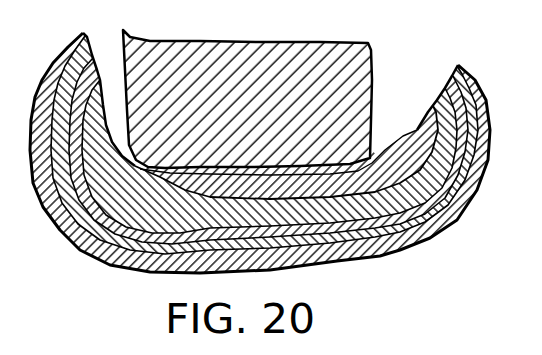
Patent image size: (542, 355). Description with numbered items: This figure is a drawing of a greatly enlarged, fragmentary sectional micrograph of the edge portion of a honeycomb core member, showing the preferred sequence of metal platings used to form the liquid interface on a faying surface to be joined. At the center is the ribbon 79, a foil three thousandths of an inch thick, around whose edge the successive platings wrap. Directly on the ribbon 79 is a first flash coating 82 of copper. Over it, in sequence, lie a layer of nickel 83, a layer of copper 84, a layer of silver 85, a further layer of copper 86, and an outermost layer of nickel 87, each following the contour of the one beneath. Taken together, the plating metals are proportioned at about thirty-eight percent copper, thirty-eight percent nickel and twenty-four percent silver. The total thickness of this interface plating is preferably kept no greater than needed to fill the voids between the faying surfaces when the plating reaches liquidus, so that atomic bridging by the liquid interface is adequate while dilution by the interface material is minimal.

The ribbon 79 is at (372, 56).
The first flash coating 82 is at (370, 157).
The Ni layer 83 is at (410, 143).
The Cu layer 84 is at (470, 118).
The Ag layer 85 is at (451, 137).
The Cu layer 86 is at (458, 163).
The Ni layer 87 is at (467, 191).